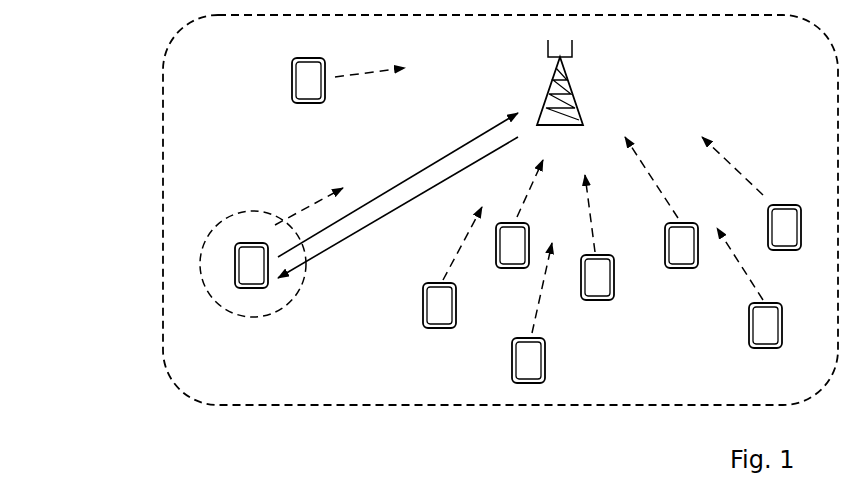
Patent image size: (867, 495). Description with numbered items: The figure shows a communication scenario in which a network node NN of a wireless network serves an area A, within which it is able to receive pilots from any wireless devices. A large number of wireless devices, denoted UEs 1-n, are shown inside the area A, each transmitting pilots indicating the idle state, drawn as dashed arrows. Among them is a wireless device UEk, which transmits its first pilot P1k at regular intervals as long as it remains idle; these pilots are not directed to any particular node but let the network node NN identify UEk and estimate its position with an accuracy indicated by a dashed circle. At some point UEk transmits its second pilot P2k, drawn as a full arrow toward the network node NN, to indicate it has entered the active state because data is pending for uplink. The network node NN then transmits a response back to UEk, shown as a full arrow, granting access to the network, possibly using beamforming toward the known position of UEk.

The area A is at (160, 100).
The network node NN is at (572, 77).
The wireless device UEk is at (251, 242).
The first pilot P1k is at (309, 199).
The second pilot P2k is at (398, 185).
The element response is at (398, 210).
The wireless devices UEs 1-n is at (343, 380).